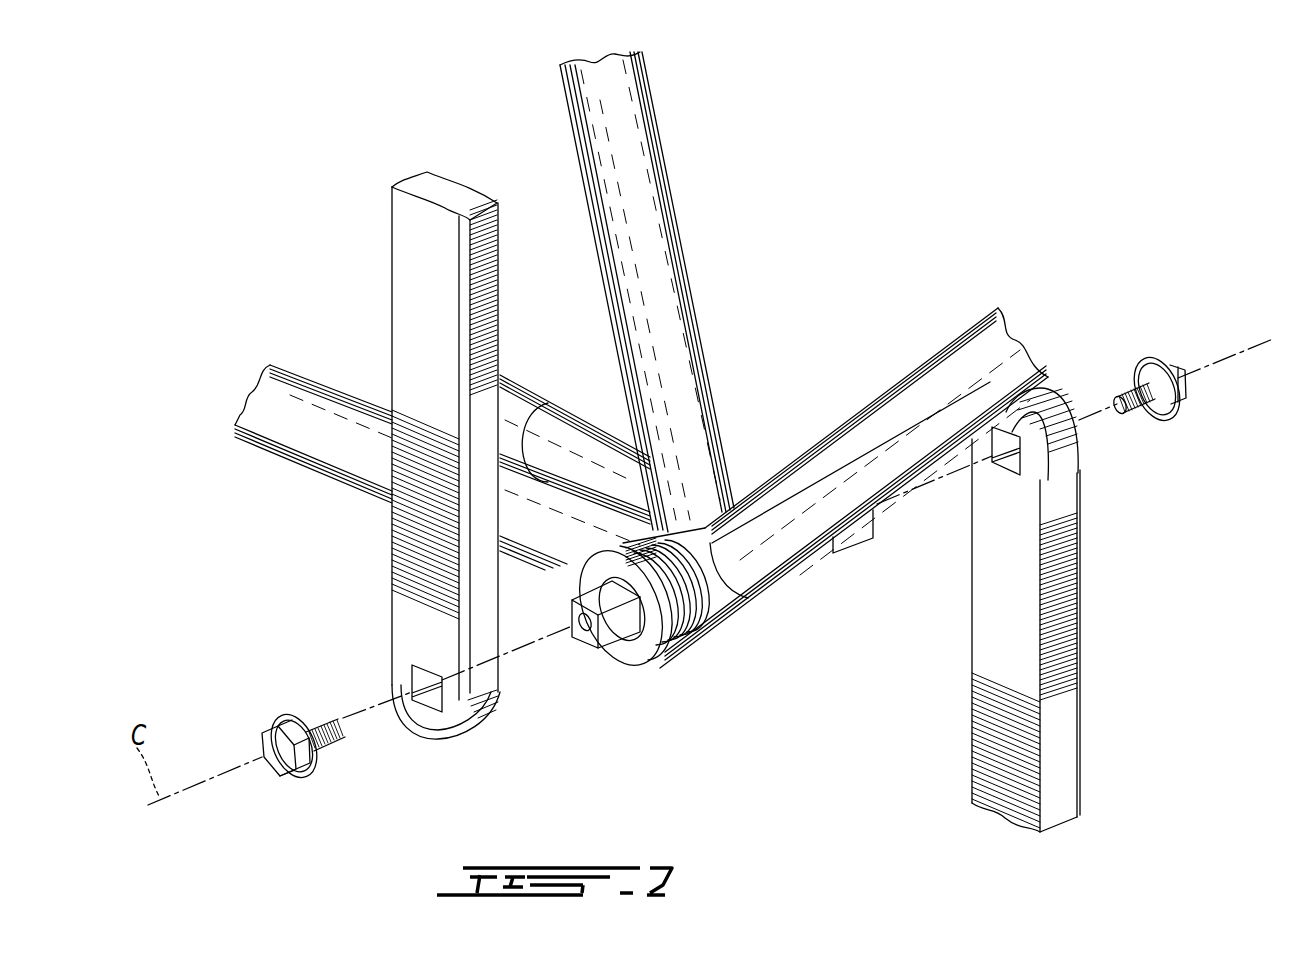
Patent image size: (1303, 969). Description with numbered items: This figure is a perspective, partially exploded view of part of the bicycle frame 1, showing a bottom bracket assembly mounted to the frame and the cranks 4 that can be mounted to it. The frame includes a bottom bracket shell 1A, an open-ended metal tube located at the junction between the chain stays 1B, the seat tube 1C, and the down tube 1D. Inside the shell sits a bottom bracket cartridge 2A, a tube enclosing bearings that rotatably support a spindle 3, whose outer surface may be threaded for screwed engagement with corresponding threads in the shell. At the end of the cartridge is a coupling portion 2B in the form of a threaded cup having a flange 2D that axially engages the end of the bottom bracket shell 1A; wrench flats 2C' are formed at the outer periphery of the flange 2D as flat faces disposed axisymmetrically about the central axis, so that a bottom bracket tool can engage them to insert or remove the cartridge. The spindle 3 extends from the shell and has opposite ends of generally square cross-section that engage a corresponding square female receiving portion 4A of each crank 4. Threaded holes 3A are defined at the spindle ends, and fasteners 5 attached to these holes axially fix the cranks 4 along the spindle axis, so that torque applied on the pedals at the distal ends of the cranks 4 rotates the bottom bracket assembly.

The bicycle frame 1 is at (636, 217).
The bottom bracket shell 1A is at (772, 602).
The chain stays 1B is at (515, 418).
The seat tube 1C is at (682, 365).
The down tube 1D is at (950, 378).
The bottom bracket cartridge 2A is at (680, 680).
The coupling portion 2B is at (654, 682).
The wrench flats 2C' is at (700, 676).
The flange 2D is at (690, 642).
The spindle 3 is at (600, 663).
The threaded holes 3A is at (580, 642).
The cranks 4 is at (418, 256).
The female receiving portion 4A is at (432, 702).
The fasteners 5 is at (276, 727).